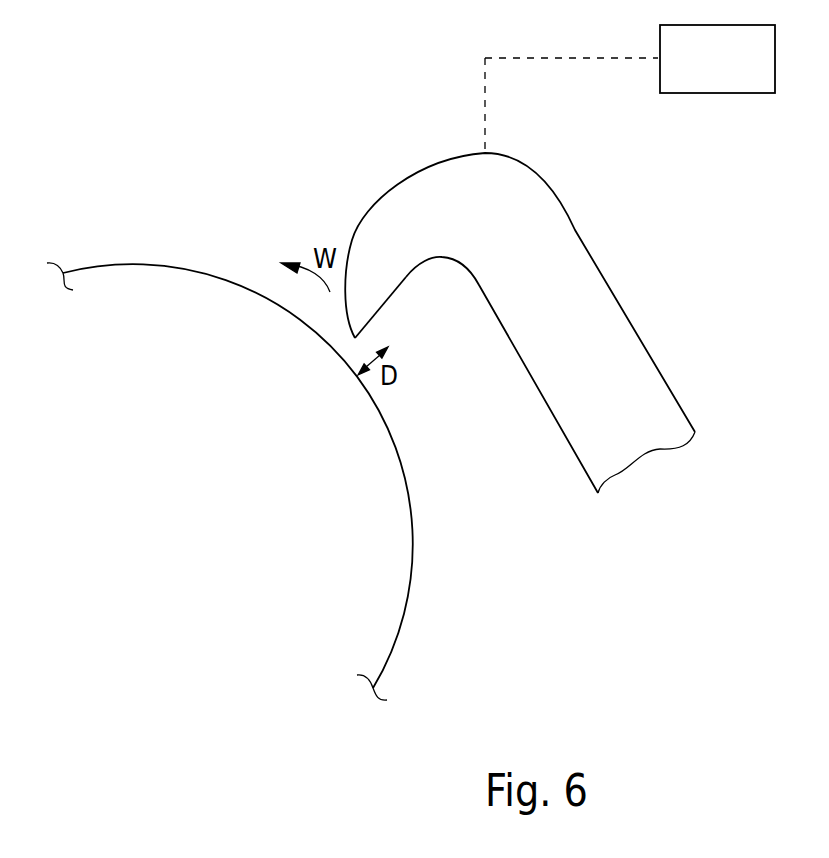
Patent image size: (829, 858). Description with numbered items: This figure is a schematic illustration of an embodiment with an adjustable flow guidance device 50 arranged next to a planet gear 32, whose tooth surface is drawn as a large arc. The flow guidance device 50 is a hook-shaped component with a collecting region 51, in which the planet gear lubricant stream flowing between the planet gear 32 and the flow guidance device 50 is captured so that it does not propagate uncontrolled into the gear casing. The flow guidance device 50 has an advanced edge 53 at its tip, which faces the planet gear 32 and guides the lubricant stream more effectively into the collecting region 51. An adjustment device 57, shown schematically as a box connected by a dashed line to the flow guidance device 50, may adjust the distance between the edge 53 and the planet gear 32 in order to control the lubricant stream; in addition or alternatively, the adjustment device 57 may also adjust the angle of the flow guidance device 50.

The planet gear 32 is at (405, 474).
The flow guidance device 50 is at (617, 345).
The collecting region 51 is at (503, 406).
The edge 53 is at (377, 313).
The adjustment device 57 is at (728, 73).